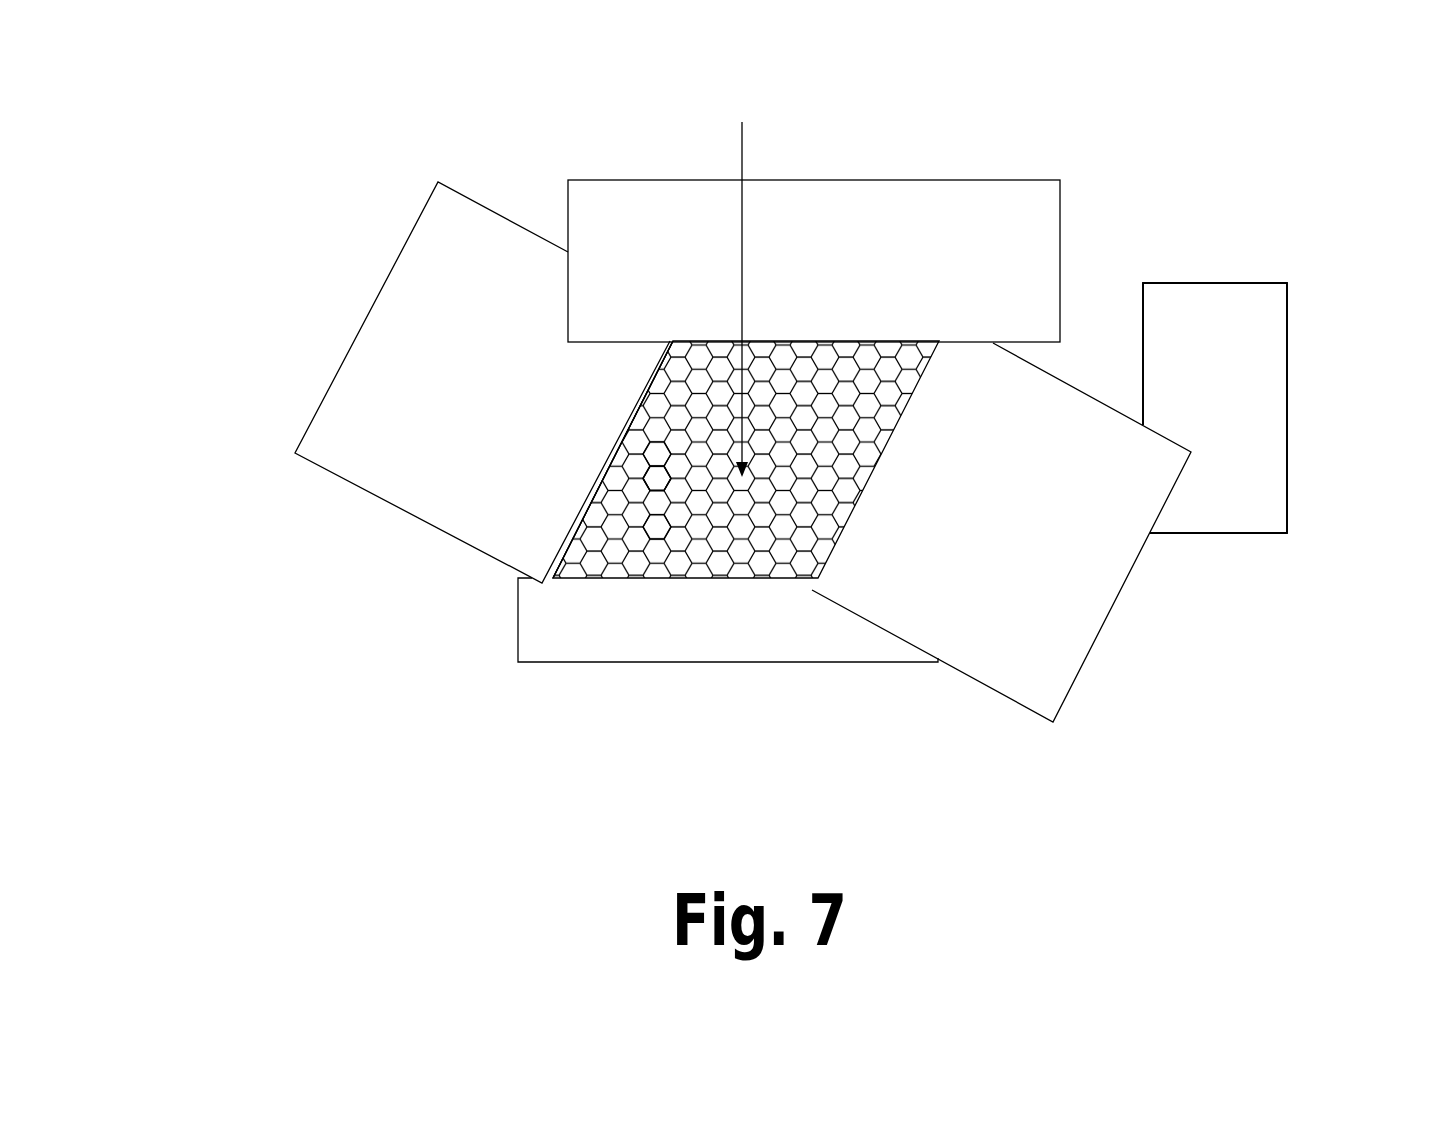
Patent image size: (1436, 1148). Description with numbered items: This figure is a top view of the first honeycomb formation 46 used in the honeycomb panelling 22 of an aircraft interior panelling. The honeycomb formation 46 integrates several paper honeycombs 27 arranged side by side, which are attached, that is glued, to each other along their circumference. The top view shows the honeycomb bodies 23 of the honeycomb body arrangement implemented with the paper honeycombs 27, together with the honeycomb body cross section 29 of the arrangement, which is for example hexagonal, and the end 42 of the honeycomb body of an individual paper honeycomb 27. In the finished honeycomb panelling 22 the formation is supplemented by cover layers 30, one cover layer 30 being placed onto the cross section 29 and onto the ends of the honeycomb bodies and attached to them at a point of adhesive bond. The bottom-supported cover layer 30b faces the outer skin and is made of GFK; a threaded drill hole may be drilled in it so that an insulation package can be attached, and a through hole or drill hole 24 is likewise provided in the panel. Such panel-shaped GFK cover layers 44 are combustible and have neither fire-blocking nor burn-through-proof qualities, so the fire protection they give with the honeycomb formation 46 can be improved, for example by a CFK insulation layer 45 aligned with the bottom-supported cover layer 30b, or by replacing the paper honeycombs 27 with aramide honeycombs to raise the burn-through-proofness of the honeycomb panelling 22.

The honeycomb panelling 22 is at (272, 138).
The honeycomb body 23 is at (650, 474).
The through hole; drill hole 24 is at (610, 470).
The paper honeycomb 27 is at (769, 579).
The cross section of the honeycomb body 29 is at (661, 537).
The cover layer 30 is at (1260, 375).
The cover layer, bottom supported 30b is at (948, 518).
The end of the honeycomb body 42 is at (653, 444).
The GFK cover layer 44 is at (937, 538).
The CFK insulation layer 45 is at (1030, 230).
The first honeycomb formation 46 is at (742, 122).